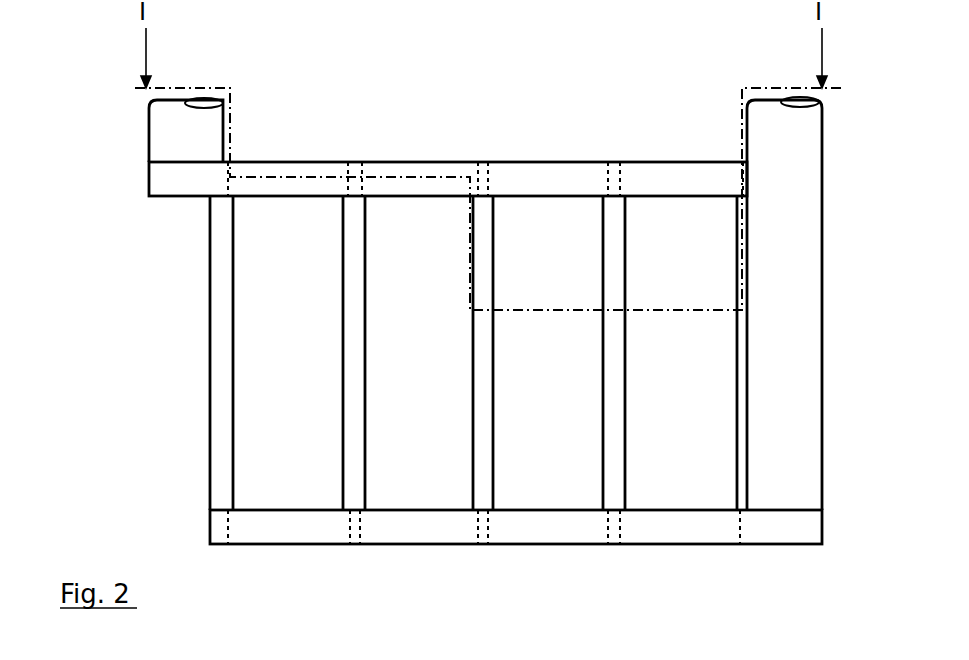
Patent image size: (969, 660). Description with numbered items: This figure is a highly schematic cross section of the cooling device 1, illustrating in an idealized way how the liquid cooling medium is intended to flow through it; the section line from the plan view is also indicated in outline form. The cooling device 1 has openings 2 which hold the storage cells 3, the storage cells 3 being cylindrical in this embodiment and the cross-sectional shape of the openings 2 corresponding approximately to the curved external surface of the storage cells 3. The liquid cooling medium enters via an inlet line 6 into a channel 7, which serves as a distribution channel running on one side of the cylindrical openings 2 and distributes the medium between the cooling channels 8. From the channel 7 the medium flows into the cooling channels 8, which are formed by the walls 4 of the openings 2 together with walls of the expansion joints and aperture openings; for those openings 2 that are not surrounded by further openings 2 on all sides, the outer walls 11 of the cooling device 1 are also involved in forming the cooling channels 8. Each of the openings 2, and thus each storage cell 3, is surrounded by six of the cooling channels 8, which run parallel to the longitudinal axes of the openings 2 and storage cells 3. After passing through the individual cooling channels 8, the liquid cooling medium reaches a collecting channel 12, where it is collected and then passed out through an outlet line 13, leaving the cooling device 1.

The cooling device 1 is at (434, 106).
The openings 2 is at (317, 312).
The storage cells 3 is at (569, 282).
The walls of the openings 4 is at (337, 438).
The inlet line 6 is at (779, 133).
The channel 7 is at (769, 530).
The cooling channels 8 is at (353, 383).
The outer walls 11 is at (207, 483).
The collecting channel 12 is at (167, 173).
The outlet line 13 is at (162, 124).